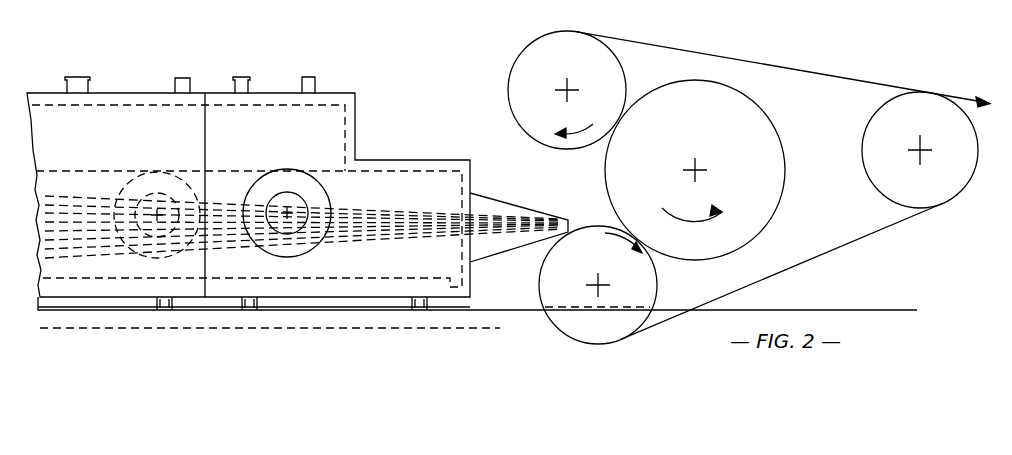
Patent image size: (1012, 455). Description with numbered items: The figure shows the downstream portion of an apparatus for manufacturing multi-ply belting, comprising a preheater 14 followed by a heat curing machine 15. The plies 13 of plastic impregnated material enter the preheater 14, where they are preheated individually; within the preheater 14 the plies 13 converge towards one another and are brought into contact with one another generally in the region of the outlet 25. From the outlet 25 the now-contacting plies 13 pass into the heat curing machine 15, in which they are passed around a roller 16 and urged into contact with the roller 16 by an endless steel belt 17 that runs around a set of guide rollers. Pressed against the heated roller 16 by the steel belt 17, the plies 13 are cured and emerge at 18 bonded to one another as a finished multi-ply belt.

The preheater 14 is at (106, 135).
The ply 13 is at (362, 215).
The outlet 25 is at (571, 223).
The roller 16 is at (738, 134).
The heat curing machine 15 is at (834, 209).
The emergence point of bonded plies 18 is at (967, 103).
The endless steel belt 17 is at (862, 240).